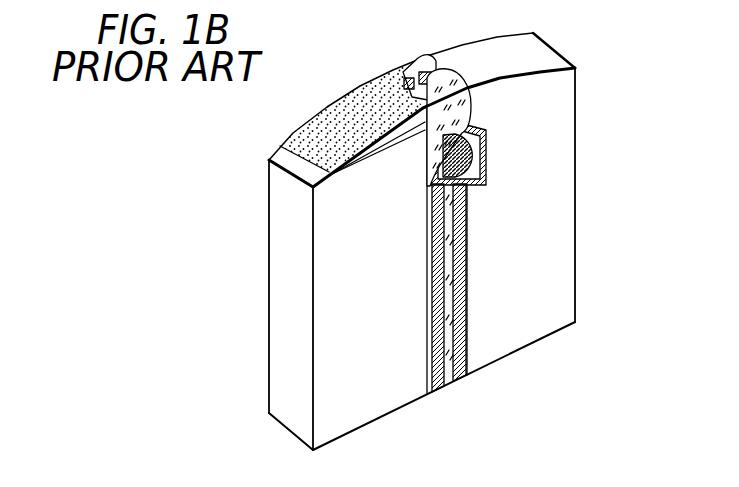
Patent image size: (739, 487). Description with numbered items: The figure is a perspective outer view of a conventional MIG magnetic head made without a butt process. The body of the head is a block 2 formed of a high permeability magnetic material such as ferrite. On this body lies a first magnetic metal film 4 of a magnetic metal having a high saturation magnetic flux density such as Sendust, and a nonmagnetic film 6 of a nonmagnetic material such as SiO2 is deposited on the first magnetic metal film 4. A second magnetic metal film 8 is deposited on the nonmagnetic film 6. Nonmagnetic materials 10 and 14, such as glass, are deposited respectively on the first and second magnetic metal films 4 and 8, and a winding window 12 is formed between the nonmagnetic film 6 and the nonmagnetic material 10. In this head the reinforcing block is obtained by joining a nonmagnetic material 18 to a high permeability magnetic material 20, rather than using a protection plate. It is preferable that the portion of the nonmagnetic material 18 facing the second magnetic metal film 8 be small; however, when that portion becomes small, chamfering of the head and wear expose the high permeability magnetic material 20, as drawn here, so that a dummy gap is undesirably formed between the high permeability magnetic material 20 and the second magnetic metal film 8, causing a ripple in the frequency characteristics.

The block 2 is at (573, 134).
The first magnetic metal film 4 is at (460, 378).
The nonmagnetic film 6 is at (415, 70).
The second magnetic metal film 8 is at (410, 73).
The nonmagnetic material 10 is at (485, 175).
The winding window 12 is at (466, 140).
The nonmagnetic material 14 is at (452, 80).
The nonmagnetic material 18 is at (338, 117).
The high permeability magnetic material 20 is at (277, 340).